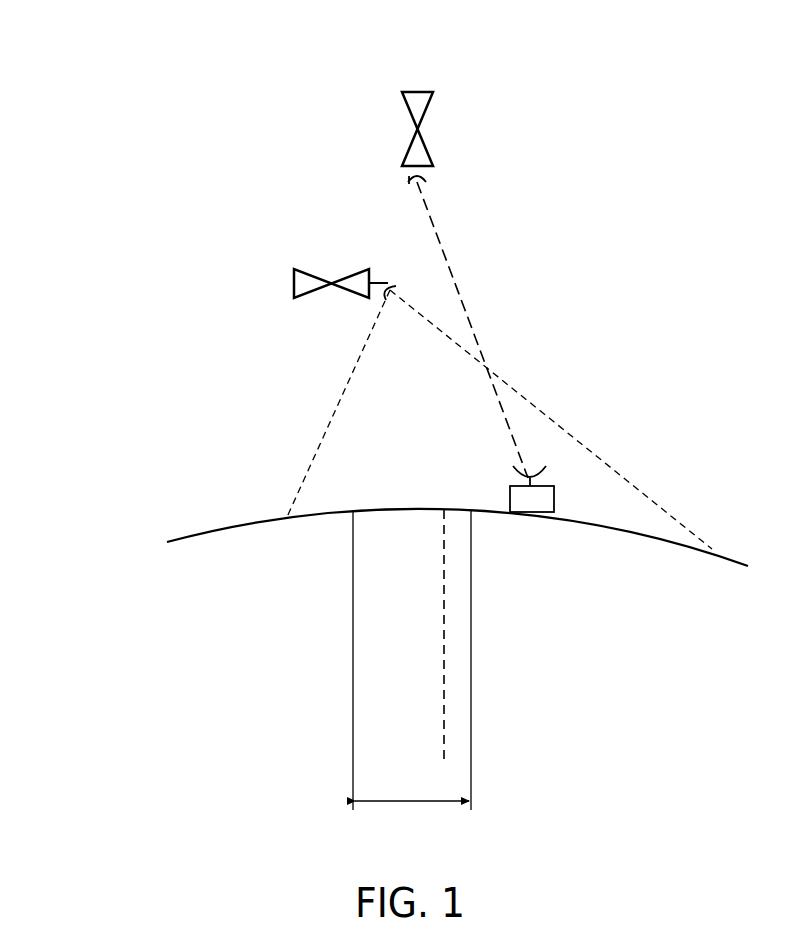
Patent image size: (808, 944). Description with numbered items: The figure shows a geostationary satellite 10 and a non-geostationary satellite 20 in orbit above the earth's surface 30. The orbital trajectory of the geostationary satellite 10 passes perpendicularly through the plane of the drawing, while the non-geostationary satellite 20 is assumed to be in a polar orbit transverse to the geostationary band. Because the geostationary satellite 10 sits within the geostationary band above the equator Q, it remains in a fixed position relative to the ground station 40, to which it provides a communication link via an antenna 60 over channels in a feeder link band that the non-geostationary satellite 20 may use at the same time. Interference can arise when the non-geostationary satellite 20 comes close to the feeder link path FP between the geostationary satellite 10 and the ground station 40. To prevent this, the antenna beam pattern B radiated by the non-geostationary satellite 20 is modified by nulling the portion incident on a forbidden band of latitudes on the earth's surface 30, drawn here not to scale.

The geostationary satellite 10 is at (433, 138).
The non-geostationary satellite 20 is at (339, 268).
The earth's surface 30 is at (722, 550).
The ground station 40 is at (508, 503).
The antenna 60 is at (387, 283).
The feeder link path FP is at (490, 341).
The antenna beam pattern B is at (556, 410).
The equator Q is at (462, 651).